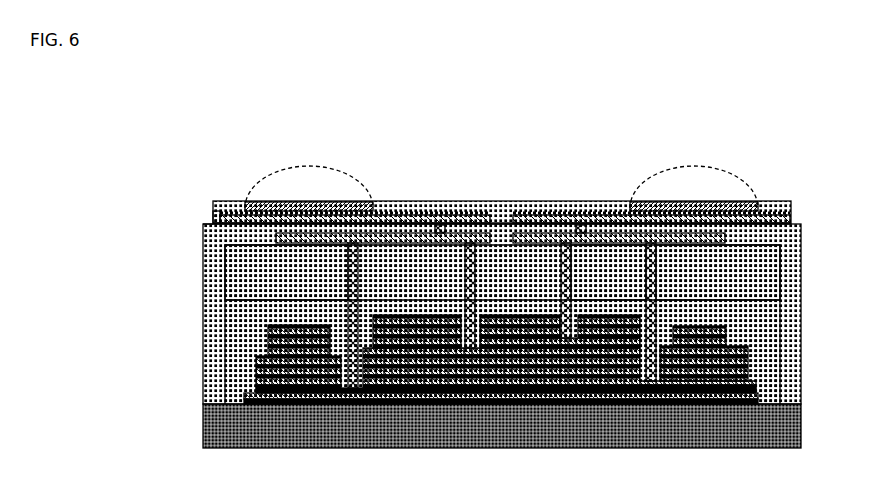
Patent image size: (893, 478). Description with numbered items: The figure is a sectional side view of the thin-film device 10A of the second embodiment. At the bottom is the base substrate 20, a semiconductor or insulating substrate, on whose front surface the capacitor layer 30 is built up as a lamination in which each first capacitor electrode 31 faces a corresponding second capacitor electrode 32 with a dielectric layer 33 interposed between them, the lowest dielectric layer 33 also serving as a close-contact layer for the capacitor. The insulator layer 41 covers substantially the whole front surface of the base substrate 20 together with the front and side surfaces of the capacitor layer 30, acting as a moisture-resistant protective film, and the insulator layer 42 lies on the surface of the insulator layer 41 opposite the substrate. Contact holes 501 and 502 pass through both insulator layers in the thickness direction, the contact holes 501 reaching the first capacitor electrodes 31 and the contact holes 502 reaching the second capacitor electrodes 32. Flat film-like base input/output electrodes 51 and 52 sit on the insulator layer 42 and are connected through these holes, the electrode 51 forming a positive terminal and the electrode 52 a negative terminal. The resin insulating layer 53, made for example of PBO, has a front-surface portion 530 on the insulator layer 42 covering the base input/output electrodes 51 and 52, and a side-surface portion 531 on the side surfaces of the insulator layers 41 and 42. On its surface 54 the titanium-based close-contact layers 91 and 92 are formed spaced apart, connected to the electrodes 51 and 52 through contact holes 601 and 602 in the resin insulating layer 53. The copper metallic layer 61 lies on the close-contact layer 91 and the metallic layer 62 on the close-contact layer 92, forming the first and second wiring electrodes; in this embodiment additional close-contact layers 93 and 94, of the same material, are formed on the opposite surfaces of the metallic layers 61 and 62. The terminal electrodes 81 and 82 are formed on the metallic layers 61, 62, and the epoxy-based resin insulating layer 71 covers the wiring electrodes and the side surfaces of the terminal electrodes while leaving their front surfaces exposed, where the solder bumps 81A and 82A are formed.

The thin-film device 10A is at (800, 143).
The base substrate 20 is at (784, 418).
The capacitor layer 30 is at (443, 356).
The first capacitor electrode 31 is at (236, 384).
The second capacitor electrode 32 is at (250, 376).
The dielectric layer 33 is at (238, 382).
The insulator layer 41 is at (763, 340).
The insulator layer 42 is at (760, 247).
The base input/output electrode 51 is at (450, 229).
The base input/output electrode 52 is at (552, 229).
The resin insulating layer 53 is at (452, 283).
The surface 54 is at (204, 211).
The metallic layer 61 is at (460, 222).
The metallic layer 62 is at (516, 222).
The resin insulating layer 71 is at (382, 206).
The terminal electrode 81 is at (252, 195).
The terminal electrode 82 is at (745, 196).
The solder bump 81A is at (268, 163).
The solder bump 82A is at (718, 163).
The close-contact layer 91 is at (206, 206).
The close-contact layer 92 is at (792, 216).
The close-contact layer 93 is at (217, 204).
The close-contact layer 94 is at (784, 197).
The contact hole 501 is at (340, 268).
The contact hole 502 is at (650, 282).
The front-surface portion 530 is at (430, 204).
The side-surface portion 531 is at (203, 257).
The contact hole 601 is at (431, 217).
The contact hole 602 is at (573, 217).